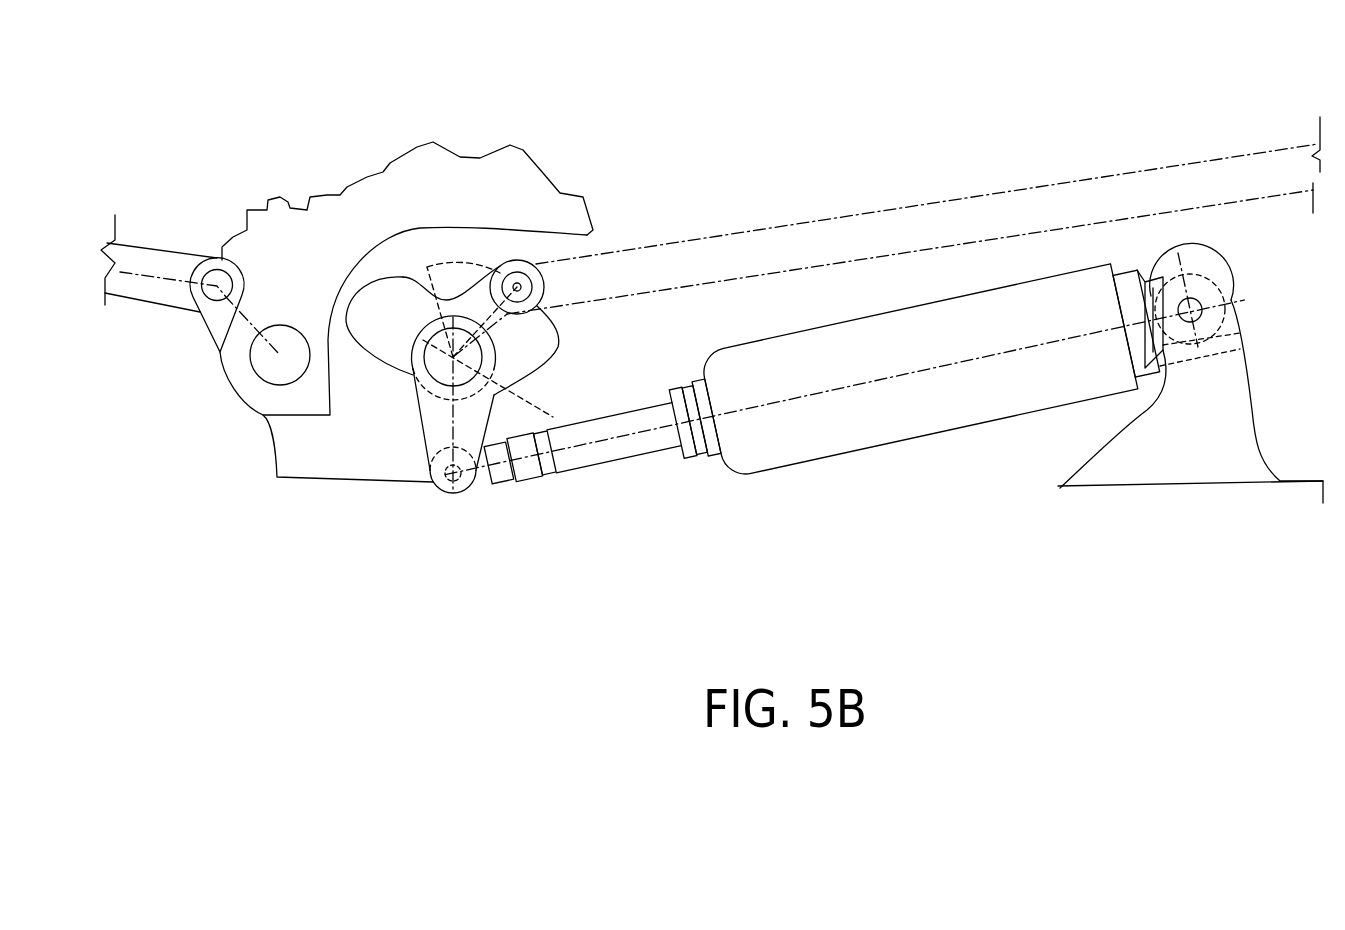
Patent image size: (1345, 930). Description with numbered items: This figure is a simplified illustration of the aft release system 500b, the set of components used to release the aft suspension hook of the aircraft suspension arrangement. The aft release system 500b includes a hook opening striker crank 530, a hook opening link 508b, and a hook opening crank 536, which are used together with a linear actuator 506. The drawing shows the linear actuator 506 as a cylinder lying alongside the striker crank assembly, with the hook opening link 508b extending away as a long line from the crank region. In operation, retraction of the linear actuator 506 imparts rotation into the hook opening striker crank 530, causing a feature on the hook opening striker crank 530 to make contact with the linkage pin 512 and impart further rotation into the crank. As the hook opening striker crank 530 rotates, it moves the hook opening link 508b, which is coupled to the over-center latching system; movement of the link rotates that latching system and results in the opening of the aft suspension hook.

The aft release system 500b is at (303, 547).
The linear actuator 506 is at (913, 440).
The hook opening link 508b is at (1085, 193).
The linkage pin 512 is at (516, 288).
The hook opening striker crank 530 is at (560, 353).
The hook opening crank 536 is at (547, 280).